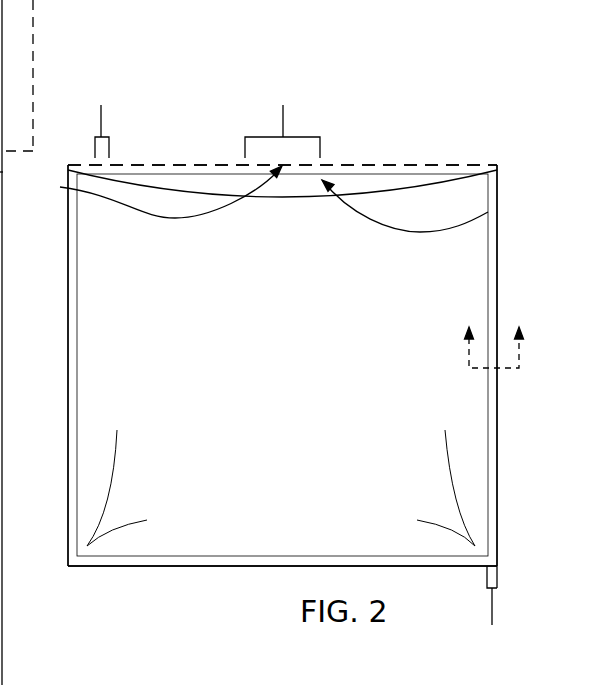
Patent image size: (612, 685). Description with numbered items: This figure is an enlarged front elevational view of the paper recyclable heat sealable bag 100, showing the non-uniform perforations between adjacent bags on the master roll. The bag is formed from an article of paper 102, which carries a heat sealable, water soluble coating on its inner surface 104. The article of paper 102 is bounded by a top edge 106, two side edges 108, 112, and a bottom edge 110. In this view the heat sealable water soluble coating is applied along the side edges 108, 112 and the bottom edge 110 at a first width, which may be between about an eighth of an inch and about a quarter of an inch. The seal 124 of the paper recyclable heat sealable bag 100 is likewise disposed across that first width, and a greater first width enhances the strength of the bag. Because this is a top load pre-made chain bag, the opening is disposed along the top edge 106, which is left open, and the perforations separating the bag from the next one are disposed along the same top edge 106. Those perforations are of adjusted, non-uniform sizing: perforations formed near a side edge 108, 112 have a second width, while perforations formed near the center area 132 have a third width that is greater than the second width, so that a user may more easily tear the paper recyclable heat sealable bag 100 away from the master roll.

The paper recyclable heat sealable bag 100 is at (284, 344).
The article of paper 102 is at (118, 290).
The inner surface 104 is at (488, 212).
The top edge 106 is at (364, 157).
The side edge 108 is at (60, 318).
The bottom edge 110 is at (157, 577).
The side edge 112 is at (506, 288).
The seal 124 is at (63, 399).
The center area 132 is at (60, 187).